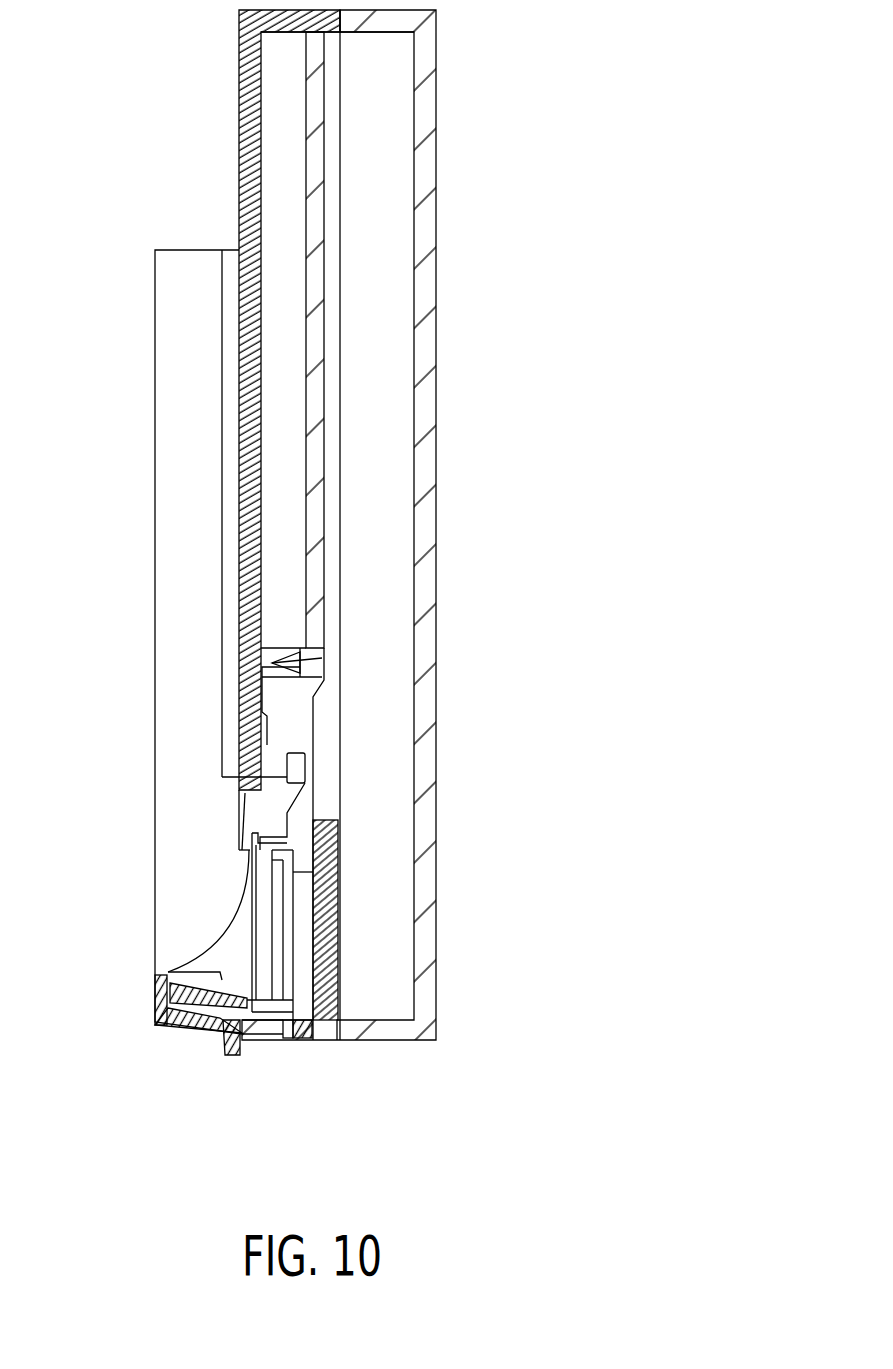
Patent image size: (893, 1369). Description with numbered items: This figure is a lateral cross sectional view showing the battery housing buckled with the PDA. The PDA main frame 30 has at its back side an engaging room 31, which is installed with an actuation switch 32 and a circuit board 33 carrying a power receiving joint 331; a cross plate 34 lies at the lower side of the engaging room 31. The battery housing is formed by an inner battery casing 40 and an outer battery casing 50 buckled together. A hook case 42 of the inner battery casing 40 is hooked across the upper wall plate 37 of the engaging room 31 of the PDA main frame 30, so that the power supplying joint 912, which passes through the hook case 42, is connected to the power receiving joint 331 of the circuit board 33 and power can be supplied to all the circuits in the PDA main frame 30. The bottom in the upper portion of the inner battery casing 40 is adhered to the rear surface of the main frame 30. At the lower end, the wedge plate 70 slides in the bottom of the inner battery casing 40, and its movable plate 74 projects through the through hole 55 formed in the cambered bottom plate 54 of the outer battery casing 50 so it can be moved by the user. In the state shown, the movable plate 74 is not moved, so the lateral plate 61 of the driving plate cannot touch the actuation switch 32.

The PDA main frame 30 is at (437, 68).
The inner battery casing 40 is at (230, 250).
The outer battery casing 50 is at (155, 333).
The circuit board 33 is at (313, 421).
The engaging room 31 is at (268, 663).
The power receiving joint 331 is at (305, 655).
The hook case 42 is at (300, 688).
The power supplying joint 912 is at (313, 682).
The actuation switch 32 is at (305, 765).
The lateral plate 61 is at (280, 798).
The upper wall plate 37 is at (245, 745).
The wedge plate 70 is at (198, 991).
The movable plate 74 is at (228, 1053).
The through hole 55 is at (255, 1033).
The bottom plate 54 is at (288, 1040).
The cross plate 34 is at (300, 1037).